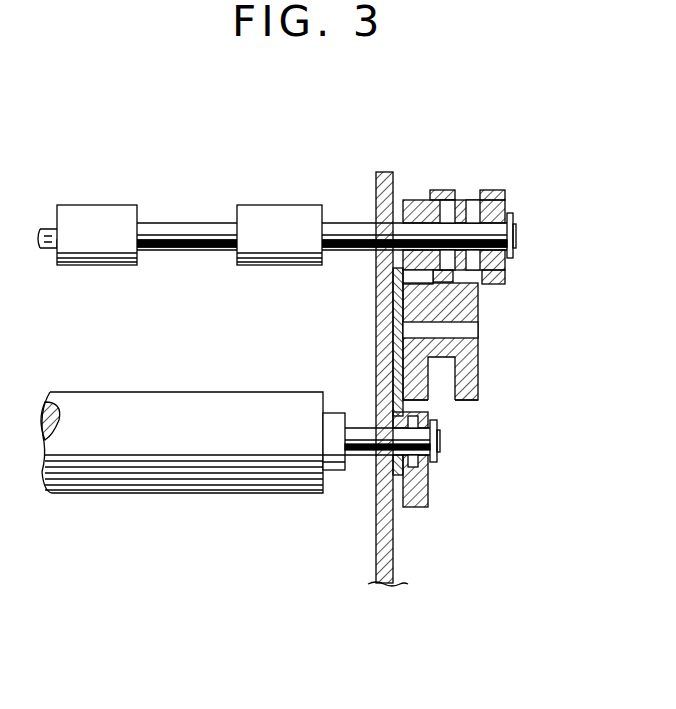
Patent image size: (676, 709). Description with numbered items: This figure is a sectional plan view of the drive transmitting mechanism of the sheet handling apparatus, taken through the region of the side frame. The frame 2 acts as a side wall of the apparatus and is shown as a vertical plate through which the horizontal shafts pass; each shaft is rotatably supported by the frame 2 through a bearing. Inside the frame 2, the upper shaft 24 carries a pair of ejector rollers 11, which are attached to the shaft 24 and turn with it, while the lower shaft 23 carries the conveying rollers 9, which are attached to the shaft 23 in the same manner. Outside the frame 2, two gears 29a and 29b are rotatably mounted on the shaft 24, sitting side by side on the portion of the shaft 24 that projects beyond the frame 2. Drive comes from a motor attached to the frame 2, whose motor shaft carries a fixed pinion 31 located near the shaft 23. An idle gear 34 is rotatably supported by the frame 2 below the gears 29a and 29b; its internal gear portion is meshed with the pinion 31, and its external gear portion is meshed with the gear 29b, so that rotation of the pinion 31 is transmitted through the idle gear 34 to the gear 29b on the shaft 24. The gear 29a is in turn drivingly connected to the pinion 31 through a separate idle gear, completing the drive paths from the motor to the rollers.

The frame 2 is at (393, 562).
The conveying rollers 9 is at (212, 392).
The ejector rollers 11 is at (110, 205).
The shaft 23 is at (357, 462).
The shaft 24 is at (340, 223).
The gear 29a is at (418, 200).
The gear 29b is at (497, 190).
The pinion 31 is at (430, 490).
The idle gear 34 is at (478, 386).